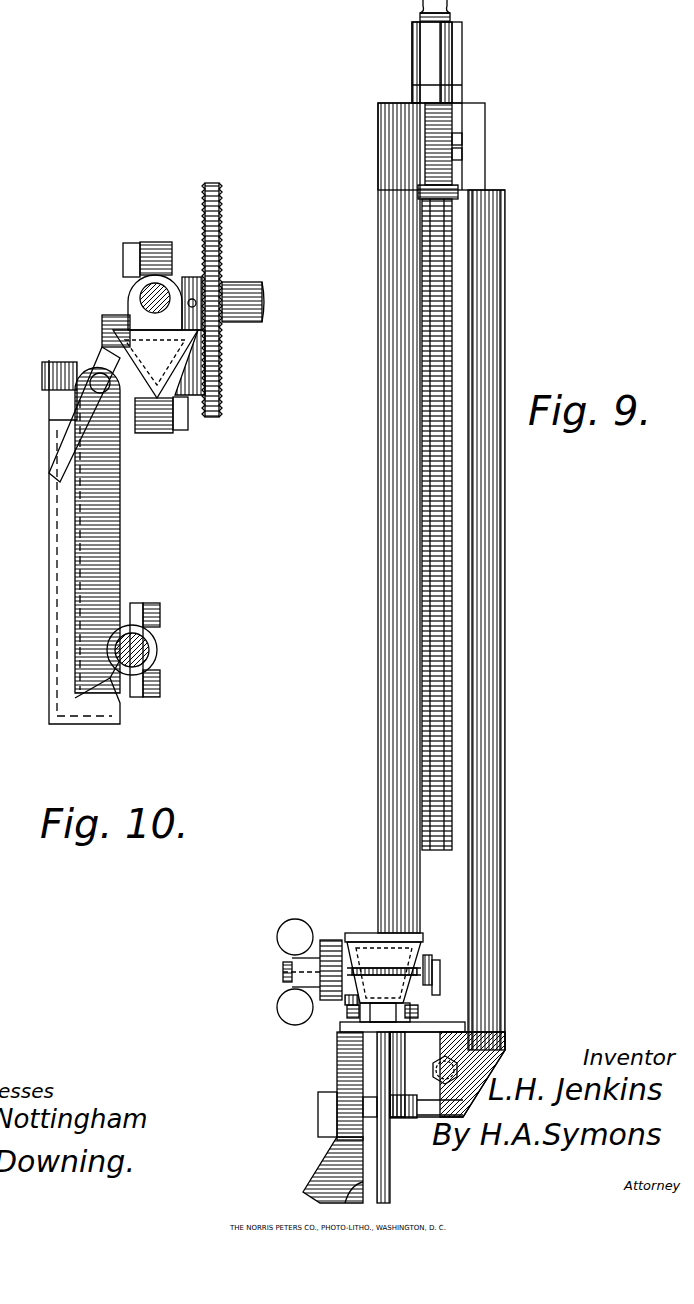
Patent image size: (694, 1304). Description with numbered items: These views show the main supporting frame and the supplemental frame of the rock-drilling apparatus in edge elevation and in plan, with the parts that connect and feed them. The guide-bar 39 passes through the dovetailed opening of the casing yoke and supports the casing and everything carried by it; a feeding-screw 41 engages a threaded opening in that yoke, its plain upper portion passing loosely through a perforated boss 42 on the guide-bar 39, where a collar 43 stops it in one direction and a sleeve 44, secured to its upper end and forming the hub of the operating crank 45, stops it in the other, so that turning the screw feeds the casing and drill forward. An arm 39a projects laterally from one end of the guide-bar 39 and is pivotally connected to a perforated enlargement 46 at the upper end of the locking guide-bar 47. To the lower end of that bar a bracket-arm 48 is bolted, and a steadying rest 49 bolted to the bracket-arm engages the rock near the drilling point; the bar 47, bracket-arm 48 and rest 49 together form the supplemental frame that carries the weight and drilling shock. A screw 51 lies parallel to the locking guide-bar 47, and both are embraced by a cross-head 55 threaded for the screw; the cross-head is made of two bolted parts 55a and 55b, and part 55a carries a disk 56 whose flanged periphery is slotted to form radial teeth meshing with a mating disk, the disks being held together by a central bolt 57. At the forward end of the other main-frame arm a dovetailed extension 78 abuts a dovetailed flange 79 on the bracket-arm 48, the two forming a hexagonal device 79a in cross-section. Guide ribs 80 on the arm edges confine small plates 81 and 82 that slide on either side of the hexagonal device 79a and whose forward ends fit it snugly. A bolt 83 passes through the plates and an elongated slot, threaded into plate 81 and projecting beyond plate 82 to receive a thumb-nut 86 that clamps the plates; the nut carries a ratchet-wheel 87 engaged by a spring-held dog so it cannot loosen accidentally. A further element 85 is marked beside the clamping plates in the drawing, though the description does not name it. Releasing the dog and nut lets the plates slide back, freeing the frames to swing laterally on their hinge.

In FIG. 9, the guide-bar 39 is at (378, 800).
In FIG. 10, the guide-bar 39 is at (73, 650).
In FIG. 9, the arm 39a is at (463, 160).
In FIG. 10, the arm 39a is at (118, 516).
In FIG. 9, the feeding-screw 41 is at (453, 508).
In FIG. 10, the feeding-screw 41 is at (157, 650).
In FIG. 10, the perforated boss 42 is at (145, 638).
In FIG. 9, the collar 43 is at (383, 198).
In FIG. 9, the sleeve 44 is at (412, 48).
In FIG. 9, the operating crank 45 is at (447, 11).
In FIG. 10, the perforated enlargement 46 is at (100, 365).
In FIG. 9, the locking guide-bar 47 is at (500, 620).
In FIG. 10, the locking guide-bar 47 is at (155, 363).
In FIG. 9, the bracket-arm 48 is at (411, 1117).
In FIG. 9, the steadying rest 49 is at (326, 1170).
In FIG. 10, the screw 51 is at (138, 290).
In FIG. 10, the cross-head 55 is at (161, 423).
In FIG. 10, the cross-head part 55a is at (205, 372).
In FIG. 10, the cross-head part 55b is at (104, 320).
In FIG. 10, the disk 56 is at (224, 300).
In FIG. 10, the bolt 57 is at (220, 274).
In FIG. 9, the reduced extension or flange 78 is at (384, 927).
In FIG. 9, the dovetailed flange 79 is at (402, 1017).
In FIG. 9, the hexagonal device 79a is at (432, 967).
In FIG. 9, the guide ribs 80 is at (398, 935).
In FIG. 9, the plate 81 is at (433, 982).
In FIG. 9, the plate 82 is at (347, 1000).
In FIG. 9, the bolt 83 is at (277, 972).
In FIG. 9, the pad 85 is at (433, 962).
In FIG. 9, the thumb-nut 86 is at (298, 972).
In FIG. 9, the ratchet-wheel 87 is at (330, 940).